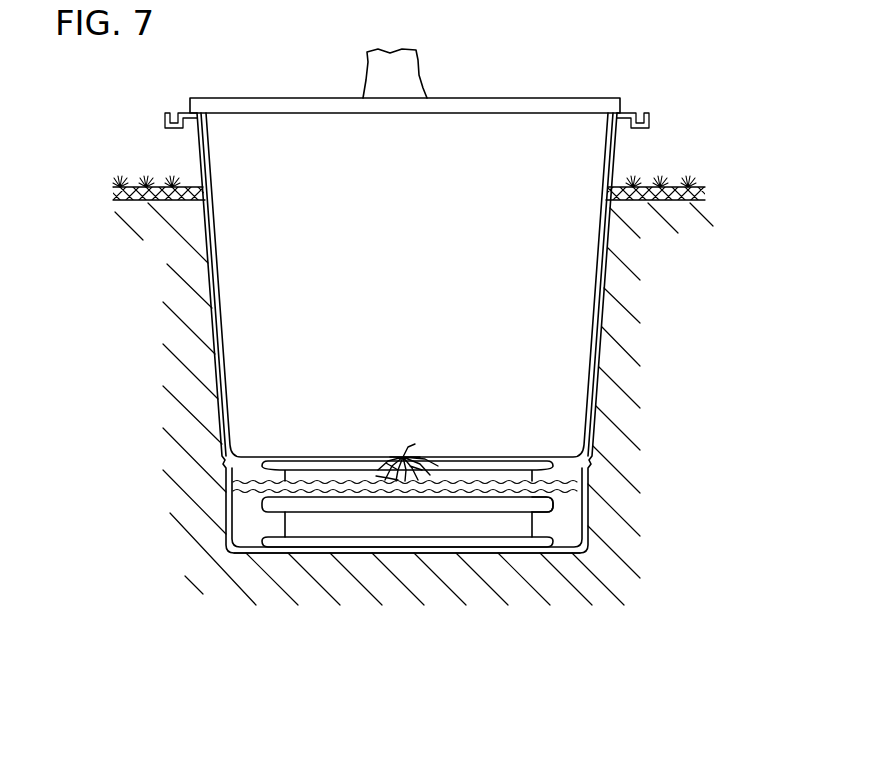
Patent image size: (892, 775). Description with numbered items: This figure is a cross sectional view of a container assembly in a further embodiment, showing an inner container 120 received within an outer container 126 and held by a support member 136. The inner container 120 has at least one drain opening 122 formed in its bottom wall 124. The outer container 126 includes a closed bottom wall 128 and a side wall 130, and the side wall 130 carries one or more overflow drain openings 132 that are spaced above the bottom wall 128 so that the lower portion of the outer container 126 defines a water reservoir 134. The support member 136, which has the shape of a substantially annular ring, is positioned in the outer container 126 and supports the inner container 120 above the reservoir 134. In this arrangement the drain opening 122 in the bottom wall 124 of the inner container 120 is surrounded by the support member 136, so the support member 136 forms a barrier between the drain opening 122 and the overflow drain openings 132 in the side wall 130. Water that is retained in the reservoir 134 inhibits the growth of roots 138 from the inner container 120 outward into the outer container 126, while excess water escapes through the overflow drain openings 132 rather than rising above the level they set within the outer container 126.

The inner container 120 is at (598, 271).
The drain opening 122 is at (413, 447).
The bottom wall 124 is at (497, 458).
The outer container 126 is at (605, 318).
The closed bottom wall 128 is at (561, 556).
The side wall 130 is at (603, 392).
The overflow drain opening 132 is at (590, 471).
The water reservoir 134 is at (252, 521).
The support member 136 is at (556, 507).
The roots 138 is at (376, 476).